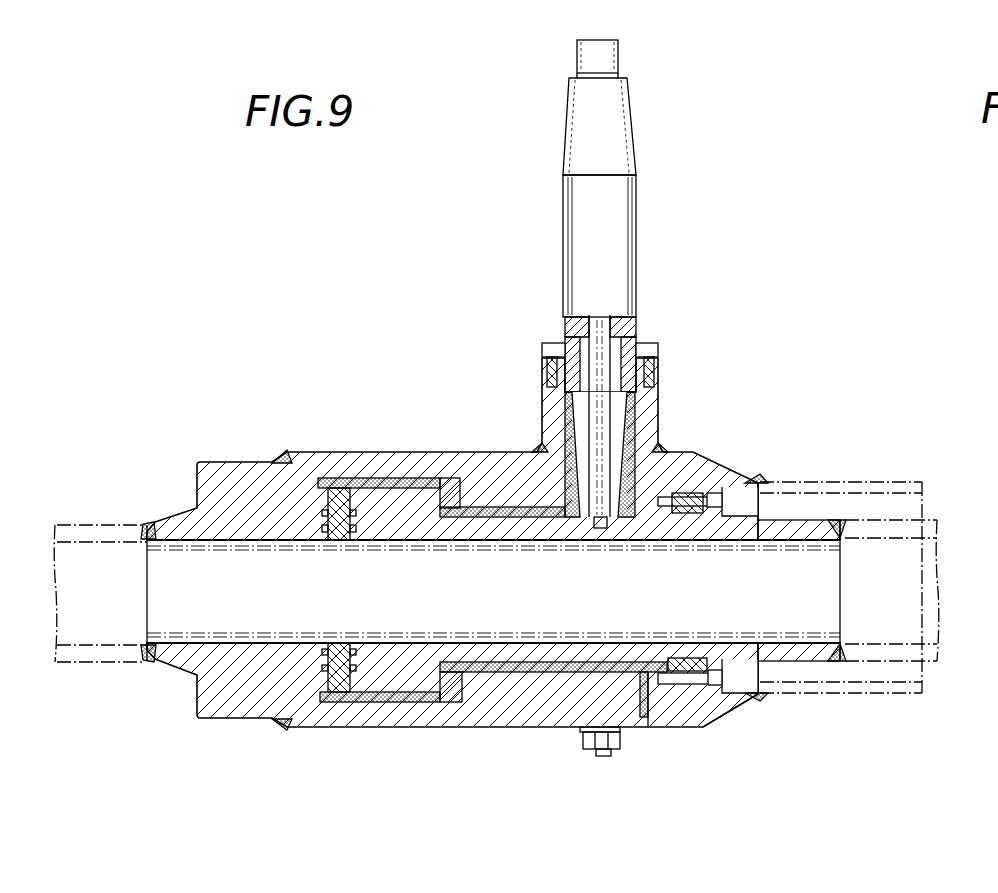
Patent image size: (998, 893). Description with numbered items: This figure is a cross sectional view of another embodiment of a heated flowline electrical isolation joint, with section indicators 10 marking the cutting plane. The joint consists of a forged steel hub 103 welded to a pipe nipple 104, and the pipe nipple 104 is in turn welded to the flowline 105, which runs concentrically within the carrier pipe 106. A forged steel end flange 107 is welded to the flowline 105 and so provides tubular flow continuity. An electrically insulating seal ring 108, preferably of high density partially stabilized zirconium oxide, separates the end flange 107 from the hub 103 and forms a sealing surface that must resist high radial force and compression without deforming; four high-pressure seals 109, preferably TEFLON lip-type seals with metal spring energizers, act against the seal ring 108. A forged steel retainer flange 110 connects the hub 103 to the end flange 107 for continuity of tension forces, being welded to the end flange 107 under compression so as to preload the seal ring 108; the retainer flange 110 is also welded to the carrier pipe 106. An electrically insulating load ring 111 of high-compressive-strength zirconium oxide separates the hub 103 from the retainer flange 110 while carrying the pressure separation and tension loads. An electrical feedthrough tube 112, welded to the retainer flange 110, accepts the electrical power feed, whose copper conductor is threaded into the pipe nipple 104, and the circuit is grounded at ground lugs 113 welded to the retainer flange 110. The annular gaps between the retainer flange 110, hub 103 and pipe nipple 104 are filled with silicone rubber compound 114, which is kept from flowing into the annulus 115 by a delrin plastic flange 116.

The section line 10 is at (597, 13).
The forged steel hub 103 is at (395, 500).
The pipe nipple 104 is at (808, 662).
The flowline 105 is at (84, 523).
The carrier pipe 106 is at (822, 480).
The forged steel end flange 107 is at (219, 728).
The electrically insulating seal ring 108 is at (333, 479).
The high-pressure seals 109 is at (322, 512).
The forged steel retainer flange 110 is at (540, 700).
The electrically insulating load ring 111 is at (455, 478).
The electrical feedthrough tube 112 is at (655, 398).
The ground lugs 113 is at (622, 746).
The silicone rubber compound 114 is at (483, 674).
The annulus 115 is at (868, 495).
The delrin plastic flange 116 is at (705, 490).